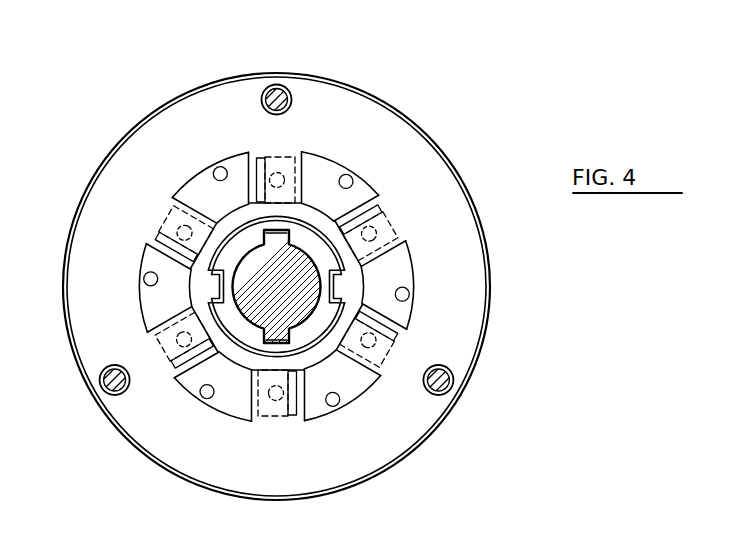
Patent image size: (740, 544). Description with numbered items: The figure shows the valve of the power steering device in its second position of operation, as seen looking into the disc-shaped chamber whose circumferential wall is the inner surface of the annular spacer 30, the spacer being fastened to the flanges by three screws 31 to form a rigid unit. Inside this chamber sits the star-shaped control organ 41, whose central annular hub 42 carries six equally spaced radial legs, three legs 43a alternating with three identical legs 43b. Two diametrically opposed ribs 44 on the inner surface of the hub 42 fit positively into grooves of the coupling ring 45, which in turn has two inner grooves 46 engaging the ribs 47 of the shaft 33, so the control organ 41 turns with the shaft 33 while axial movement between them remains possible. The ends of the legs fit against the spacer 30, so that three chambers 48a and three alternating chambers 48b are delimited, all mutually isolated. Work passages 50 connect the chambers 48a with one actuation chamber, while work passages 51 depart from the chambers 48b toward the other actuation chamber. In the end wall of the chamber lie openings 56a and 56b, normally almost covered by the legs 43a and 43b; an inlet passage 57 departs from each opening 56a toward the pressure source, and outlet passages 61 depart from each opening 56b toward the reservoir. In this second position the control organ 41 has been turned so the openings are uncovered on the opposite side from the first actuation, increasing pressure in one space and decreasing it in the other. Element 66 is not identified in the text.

The annular spacer 30 is at (450, 186).
The screws 31 is at (288, 92).
The shaft 33 is at (289, 294).
The star-shaped rotor 41 is at (247, 158).
The annular hub 42 is at (292, 416).
The legs 43a is at (291, 156).
The legs 43b is at (397, 223).
The ribs 44 is at (190, 300).
The coupling ring 45 is at (222, 338).
The inner grooves 46 is at (244, 412).
The ribs 47 is at (290, 232).
The chambers 48a is at (360, 186).
The chambers 48b is at (193, 183).
The work passages 50 is at (137, 282).
The work passages 51 is at (222, 166).
The openings 56a is at (400, 330).
The openings 56b is at (300, 415).
The inlet passage 57 is at (300, 178).
The outlet passages 61 is at (200, 207).
The leaf spring 66 is at (262, 158).